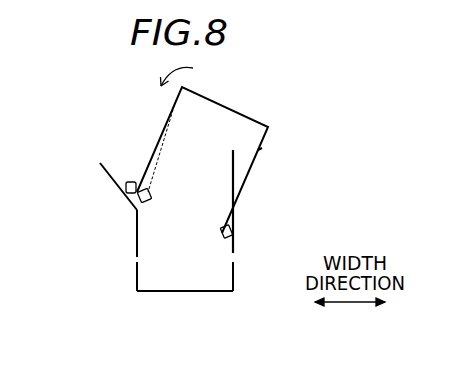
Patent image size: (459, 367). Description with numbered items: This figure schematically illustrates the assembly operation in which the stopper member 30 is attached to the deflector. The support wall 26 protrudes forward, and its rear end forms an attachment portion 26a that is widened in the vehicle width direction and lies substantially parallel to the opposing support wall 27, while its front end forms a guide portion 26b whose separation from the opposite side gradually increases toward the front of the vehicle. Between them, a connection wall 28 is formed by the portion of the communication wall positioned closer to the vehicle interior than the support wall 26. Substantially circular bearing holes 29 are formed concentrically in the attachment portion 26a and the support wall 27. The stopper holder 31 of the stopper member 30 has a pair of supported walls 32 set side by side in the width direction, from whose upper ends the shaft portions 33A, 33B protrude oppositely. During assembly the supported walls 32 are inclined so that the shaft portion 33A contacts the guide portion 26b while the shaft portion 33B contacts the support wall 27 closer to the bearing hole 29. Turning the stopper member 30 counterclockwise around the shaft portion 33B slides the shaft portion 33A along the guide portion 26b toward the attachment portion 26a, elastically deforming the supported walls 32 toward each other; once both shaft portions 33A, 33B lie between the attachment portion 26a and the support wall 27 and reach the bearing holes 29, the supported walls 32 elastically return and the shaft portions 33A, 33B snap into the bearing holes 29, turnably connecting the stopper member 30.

The support wall 26 is at (79, 210).
The attachment portion 26a is at (137, 229).
The guide portion 26b is at (118, 188).
The support wall 27 is at (237, 216).
The connection wall 28 is at (183, 291).
The bearing holes 29 is at (137, 263).
The stopper member 30 is at (227, 159).
The stopper holder 31 is at (222, 105).
The supported walls 32 is at (167, 116).
The shaft portion 33A is at (128, 183).
The shaft portion 33B is at (237, 236).